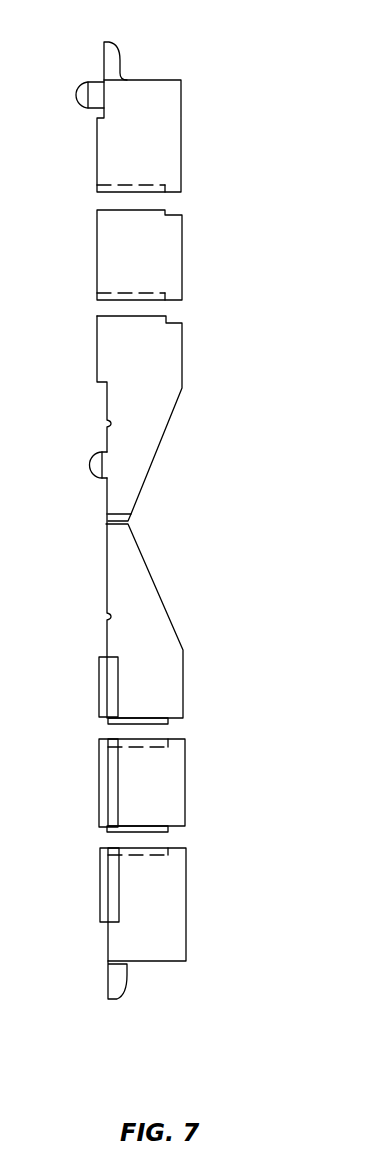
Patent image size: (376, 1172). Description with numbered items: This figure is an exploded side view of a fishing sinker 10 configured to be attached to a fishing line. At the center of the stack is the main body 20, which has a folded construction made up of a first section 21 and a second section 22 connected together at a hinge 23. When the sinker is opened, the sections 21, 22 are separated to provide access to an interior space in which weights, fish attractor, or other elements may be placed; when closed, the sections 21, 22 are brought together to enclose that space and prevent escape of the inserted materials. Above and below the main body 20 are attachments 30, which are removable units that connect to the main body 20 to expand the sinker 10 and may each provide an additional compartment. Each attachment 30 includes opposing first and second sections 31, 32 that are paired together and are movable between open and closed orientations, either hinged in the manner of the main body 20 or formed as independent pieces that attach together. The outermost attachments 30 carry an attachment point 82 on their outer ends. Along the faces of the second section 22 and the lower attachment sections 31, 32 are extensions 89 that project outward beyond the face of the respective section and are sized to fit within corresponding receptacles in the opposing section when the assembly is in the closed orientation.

The sinker 10 is at (236, 1013).
The main body 20 is at (187, 520).
The first section 21 is at (165, 353).
The second section 22 is at (172, 662).
The hinge 23 is at (132, 515).
The attachment 30 is at (248, 125).
The first section 31 is at (165, 253).
The second section 32 is at (168, 113).
The attachment point 82 is at (119, 71).
The extension 89 is at (98, 686).